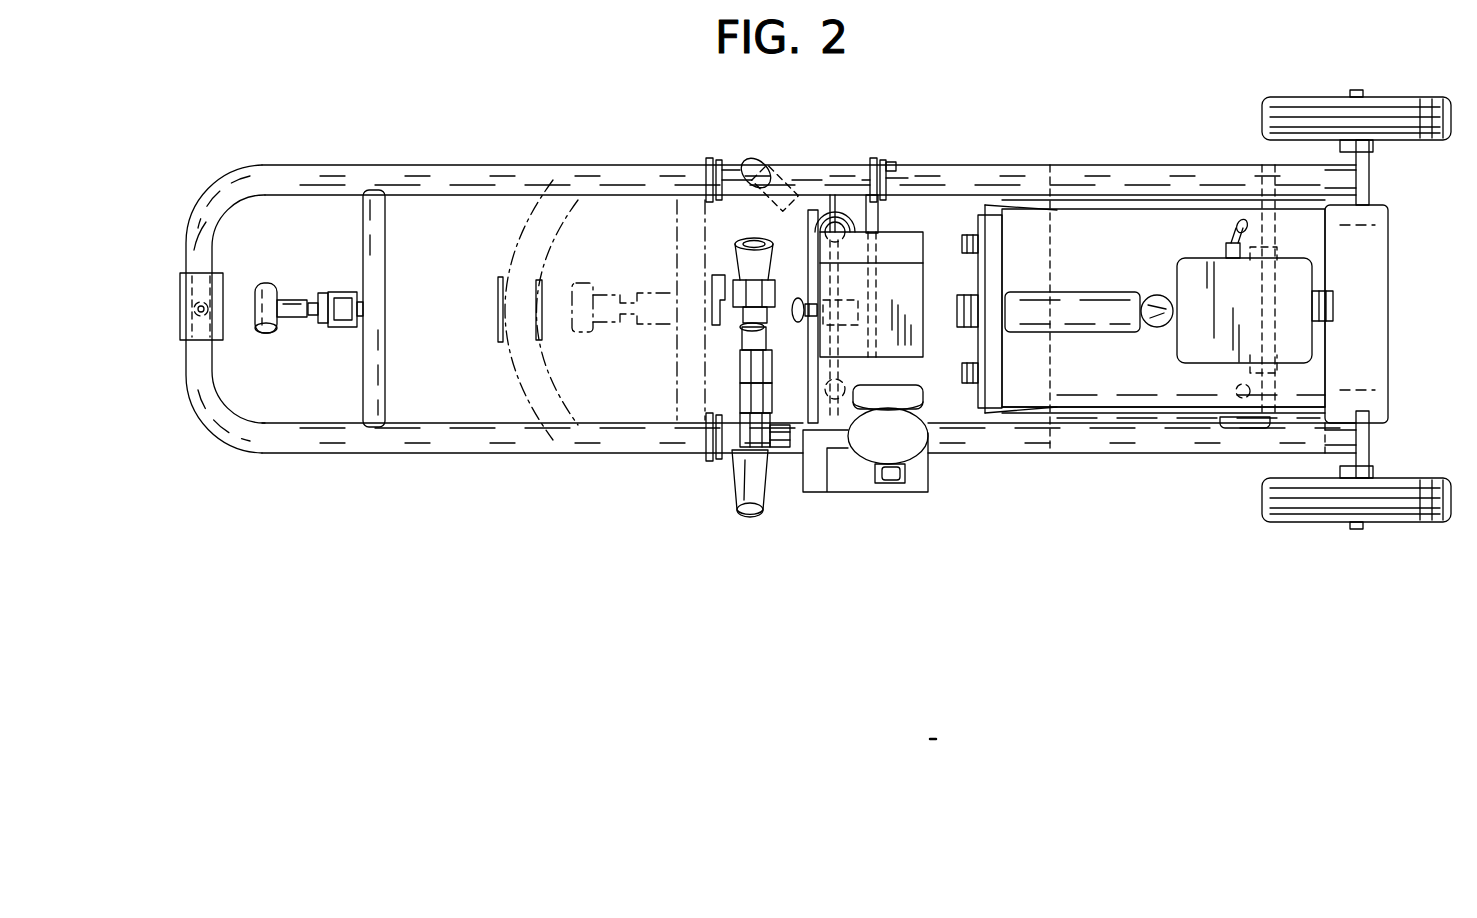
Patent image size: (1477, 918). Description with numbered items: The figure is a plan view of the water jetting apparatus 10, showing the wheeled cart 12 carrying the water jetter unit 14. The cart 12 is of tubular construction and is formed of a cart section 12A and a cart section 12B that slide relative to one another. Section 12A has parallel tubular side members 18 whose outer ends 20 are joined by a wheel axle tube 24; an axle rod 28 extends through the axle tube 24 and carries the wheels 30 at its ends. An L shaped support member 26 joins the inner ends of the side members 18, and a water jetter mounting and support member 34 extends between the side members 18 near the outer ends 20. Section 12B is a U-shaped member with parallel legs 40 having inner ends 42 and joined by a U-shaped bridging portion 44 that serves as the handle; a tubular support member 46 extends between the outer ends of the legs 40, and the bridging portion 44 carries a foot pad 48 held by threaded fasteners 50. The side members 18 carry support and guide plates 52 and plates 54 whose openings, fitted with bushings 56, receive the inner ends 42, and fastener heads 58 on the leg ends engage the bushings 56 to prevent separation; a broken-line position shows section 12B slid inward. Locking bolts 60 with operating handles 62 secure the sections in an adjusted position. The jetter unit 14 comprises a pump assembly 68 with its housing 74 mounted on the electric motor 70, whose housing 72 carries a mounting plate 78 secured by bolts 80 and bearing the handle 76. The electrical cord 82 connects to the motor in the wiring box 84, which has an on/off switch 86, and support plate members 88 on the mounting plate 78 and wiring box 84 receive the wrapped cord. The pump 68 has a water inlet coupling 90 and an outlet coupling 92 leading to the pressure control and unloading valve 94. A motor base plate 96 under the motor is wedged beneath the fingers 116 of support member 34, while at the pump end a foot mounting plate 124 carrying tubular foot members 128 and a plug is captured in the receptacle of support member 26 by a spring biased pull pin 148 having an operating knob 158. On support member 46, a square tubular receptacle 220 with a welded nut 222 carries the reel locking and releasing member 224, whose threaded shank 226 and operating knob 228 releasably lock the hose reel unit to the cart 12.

The water jetting apparatus 10 is at (1015, 107).
The wheeled cart 12 is at (520, 467).
The cart section 12A is at (1100, 460).
The cart section 12B is at (500, 232).
The water jetter unit 14 is at (1023, 205).
The tubular side members 18 is at (1097, 175).
The outer ends 20 is at (1348, 186).
The wheel axle tube 24 is at (1367, 173).
The L shaped support member 26 is at (880, 222).
The axle rod 28 is at (1362, 93).
The wheels 30 is at (1308, 105).
The water jetter mounting and support member 34 is at (1240, 428).
The legs 40 is at (483, 163).
The inner ends 42 is at (852, 175).
The U-shaped bridging portion 44 is at (195, 262).
The tubular support member 46 is at (386, 340).
The foot pad 48 is at (182, 332).
The threaded fasteners 50 is at (197, 300).
The support and guide plates 52 is at (710, 158).
The plates 54 is at (878, 163).
The bushings 56 is at (705, 170).
The heads 58 is at (892, 163).
The locking bolts 60 is at (774, 165).
The operating handles 62 is at (750, 157).
The pump assembly 68 is at (935, 245).
The electric motor 70 is at (1152, 400).
The housing 72 is at (1142, 232).
The housing 74 is at (932, 345).
The handle 76 is at (1100, 300).
The mounting plate 78 is at (985, 285).
The bolts 80 is at (968, 383).
The electrical cord 82 is at (1225, 238).
The wiring box 84 is at (1305, 285).
The on/off switch 86 is at (1150, 334).
The support plate members 88 is at (1335, 305).
The water inlet coupling 90 is at (742, 245).
The outlet coupling 92 is at (740, 347).
The pressure control and unloading valve 94 is at (733, 480).
The motor base plate 96 is at (1117, 418).
The fingers 116 is at (1283, 253).
The foot mounting plate 124 is at (832, 165).
The tubular foot member 128 is at (830, 236).
The spring biased pull pin 148 is at (800, 327).
The operating knob 158 is at (727, 312).
The square tubular receptacle 220 is at (340, 293).
The nut 222 is at (328, 322).
The reel locking and releasing member 224 is at (270, 282).
The threaded shank 226 is at (313, 318).
The operating knob 228 is at (265, 325).